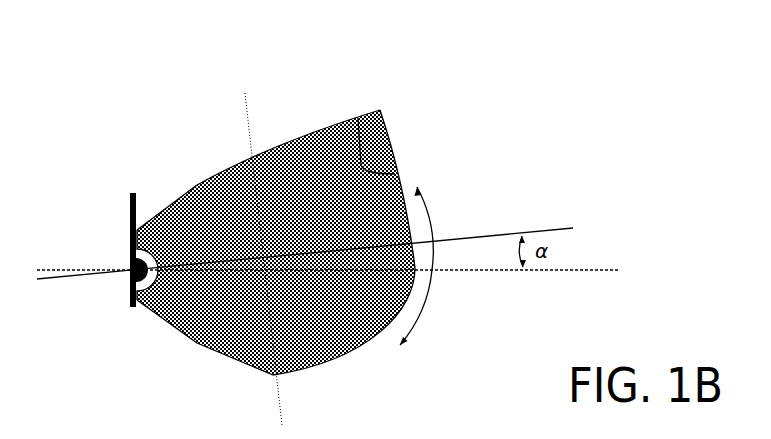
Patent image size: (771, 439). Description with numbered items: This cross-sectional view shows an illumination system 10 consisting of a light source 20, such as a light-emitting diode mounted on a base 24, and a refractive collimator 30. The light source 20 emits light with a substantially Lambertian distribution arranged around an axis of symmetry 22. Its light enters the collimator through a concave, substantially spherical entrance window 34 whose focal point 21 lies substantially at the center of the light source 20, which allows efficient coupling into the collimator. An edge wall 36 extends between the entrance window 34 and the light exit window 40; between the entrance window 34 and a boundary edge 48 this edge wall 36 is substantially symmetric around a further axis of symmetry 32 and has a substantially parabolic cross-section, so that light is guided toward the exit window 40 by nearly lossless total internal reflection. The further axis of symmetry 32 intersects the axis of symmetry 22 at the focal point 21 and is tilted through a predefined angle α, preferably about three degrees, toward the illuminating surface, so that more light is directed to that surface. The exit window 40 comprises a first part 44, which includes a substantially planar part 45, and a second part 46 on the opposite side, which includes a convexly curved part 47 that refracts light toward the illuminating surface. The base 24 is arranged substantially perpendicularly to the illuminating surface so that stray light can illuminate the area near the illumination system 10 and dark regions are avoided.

The illumination system 10 is at (448, 65).
The light source 20 is at (130, 260).
The focal point 21 is at (130, 275).
The axis of symmetry 22 is at (590, 272).
The base 24 is at (130, 205).
The refractive collimator 30 is at (273, 151).
The further axis of symmetry 32 is at (560, 228).
The concave entrance window 34 is at (155, 217).
The edge wall 36 is at (223, 170).
The light exit window 40 is at (360, 122).
The first part of the exit window 44 is at (424, 207).
The planar part 45 is at (392, 142).
The second part of the exit window 46 is at (428, 303).
The convexly curved part 47 is at (343, 360).
The boundary edge 48 is at (275, 376).